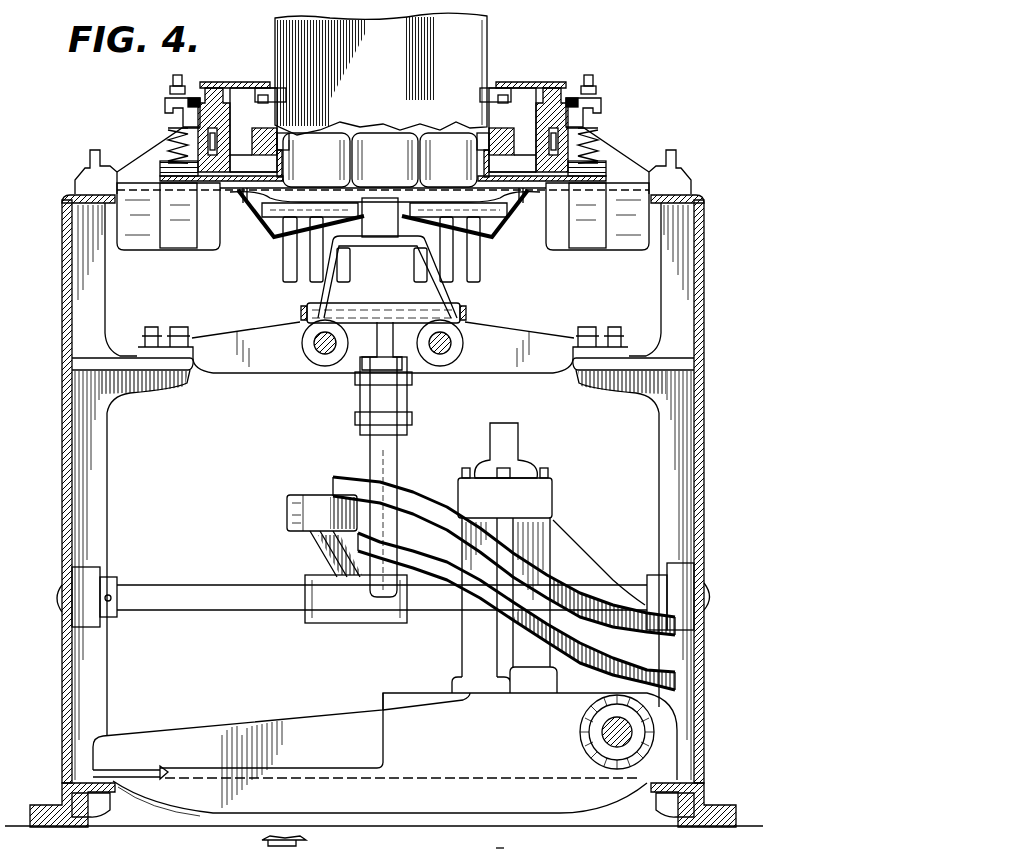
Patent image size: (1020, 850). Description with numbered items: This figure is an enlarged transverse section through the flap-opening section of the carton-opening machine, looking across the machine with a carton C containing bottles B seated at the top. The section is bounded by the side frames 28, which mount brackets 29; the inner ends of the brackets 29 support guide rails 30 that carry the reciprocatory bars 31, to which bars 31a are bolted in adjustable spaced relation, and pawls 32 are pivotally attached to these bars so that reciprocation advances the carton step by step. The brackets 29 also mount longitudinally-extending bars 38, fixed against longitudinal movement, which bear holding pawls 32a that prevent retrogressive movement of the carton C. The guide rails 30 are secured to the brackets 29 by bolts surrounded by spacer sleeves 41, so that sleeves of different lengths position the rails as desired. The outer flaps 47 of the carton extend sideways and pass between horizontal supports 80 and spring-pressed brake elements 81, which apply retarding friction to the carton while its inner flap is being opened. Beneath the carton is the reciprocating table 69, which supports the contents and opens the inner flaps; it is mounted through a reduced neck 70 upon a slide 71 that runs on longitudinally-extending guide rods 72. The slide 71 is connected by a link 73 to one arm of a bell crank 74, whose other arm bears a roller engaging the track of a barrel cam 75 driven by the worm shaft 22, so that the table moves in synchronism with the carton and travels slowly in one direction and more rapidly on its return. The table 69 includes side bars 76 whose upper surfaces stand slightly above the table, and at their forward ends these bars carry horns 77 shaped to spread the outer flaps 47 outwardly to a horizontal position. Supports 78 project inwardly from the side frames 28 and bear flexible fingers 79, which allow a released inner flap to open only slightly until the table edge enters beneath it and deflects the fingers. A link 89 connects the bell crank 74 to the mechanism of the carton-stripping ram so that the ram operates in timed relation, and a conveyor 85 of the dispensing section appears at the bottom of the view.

The worm shaft 22 is at (640, 735).
The side frames 28 is at (62, 333).
The brackets 29 is at (87, 163).
The guide rails 30 is at (200, 112).
The reciprocatory bars 31 is at (205, 135).
The bars 31a is at (276, 127).
The pawls 32 is at (380, 160).
The holding pawls 32a is at (283, 67).
The longitudinally-extending bars 38 is at (238, 82).
The spacer sleeves 41 is at (383, 130).
The outer flaps 47 is at (383, 162).
The reciprocating table 69 is at (386, 192).
The reduced neck 70 is at (380, 217).
The slide 71 is at (312, 308).
The guide rods 72 is at (319, 349).
The link 73 is at (390, 347).
The bell crank 74 is at (398, 465).
The barrel cam 75 is at (487, 578).
The side bars 76 is at (247, 207).
The horns 77 is at (275, 242).
The supports 78 is at (245, 218).
The flexible fingers 79 is at (302, 290).
The horizontal supports 80 is at (165, 181).
The spring-pressed brake elements 81 is at (196, 138).
The conveyor 85 is at (383, 706).
The link 89 is at (378, 432).
The bottles B is at (386, 123).
The carton C is at (388, 77).